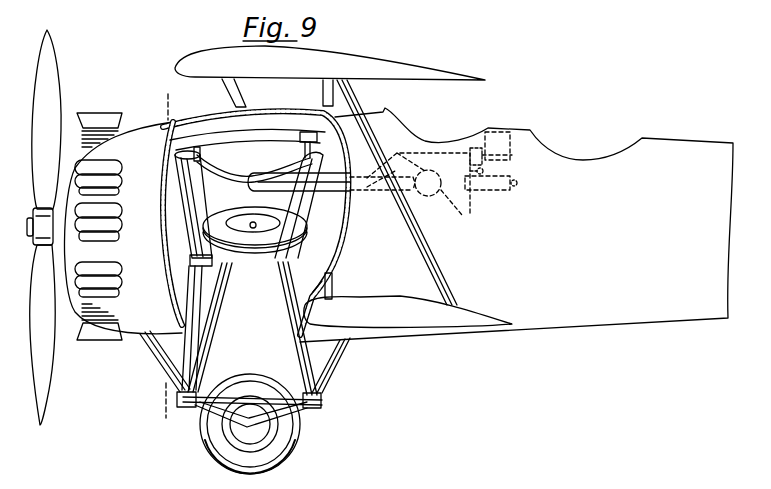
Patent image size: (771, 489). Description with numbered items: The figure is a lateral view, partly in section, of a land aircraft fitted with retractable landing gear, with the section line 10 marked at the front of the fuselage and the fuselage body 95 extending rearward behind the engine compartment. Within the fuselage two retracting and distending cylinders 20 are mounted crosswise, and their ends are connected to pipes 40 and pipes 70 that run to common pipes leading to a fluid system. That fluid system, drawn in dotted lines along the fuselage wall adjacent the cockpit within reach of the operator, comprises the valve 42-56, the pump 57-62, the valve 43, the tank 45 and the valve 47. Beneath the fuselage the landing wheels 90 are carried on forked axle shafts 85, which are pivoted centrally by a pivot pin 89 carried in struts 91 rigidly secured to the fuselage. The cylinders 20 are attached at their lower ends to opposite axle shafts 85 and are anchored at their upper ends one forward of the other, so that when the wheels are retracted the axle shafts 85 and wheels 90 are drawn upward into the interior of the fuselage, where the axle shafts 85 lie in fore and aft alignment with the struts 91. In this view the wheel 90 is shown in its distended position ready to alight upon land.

The section line of airplane 10 is at (160, 107).
The retracting and distending cylinders 20 is at (202, 208).
The pipes 40 is at (219, 164).
The valve 42-56 is at (428, 196).
The valve 43 is at (484, 171).
The tank 45 is at (510, 154).
The valve 47 is at (473, 152).
The pump 57-62 is at (488, 192).
The pipes 70 is at (232, 173).
The forked axle shafts 85 is at (276, 298).
The pivot pin 89 is at (323, 402).
The landing wheels 90 is at (307, 242).
The struts 91 is at (157, 362).
The fuselage 95 is at (424, 141).